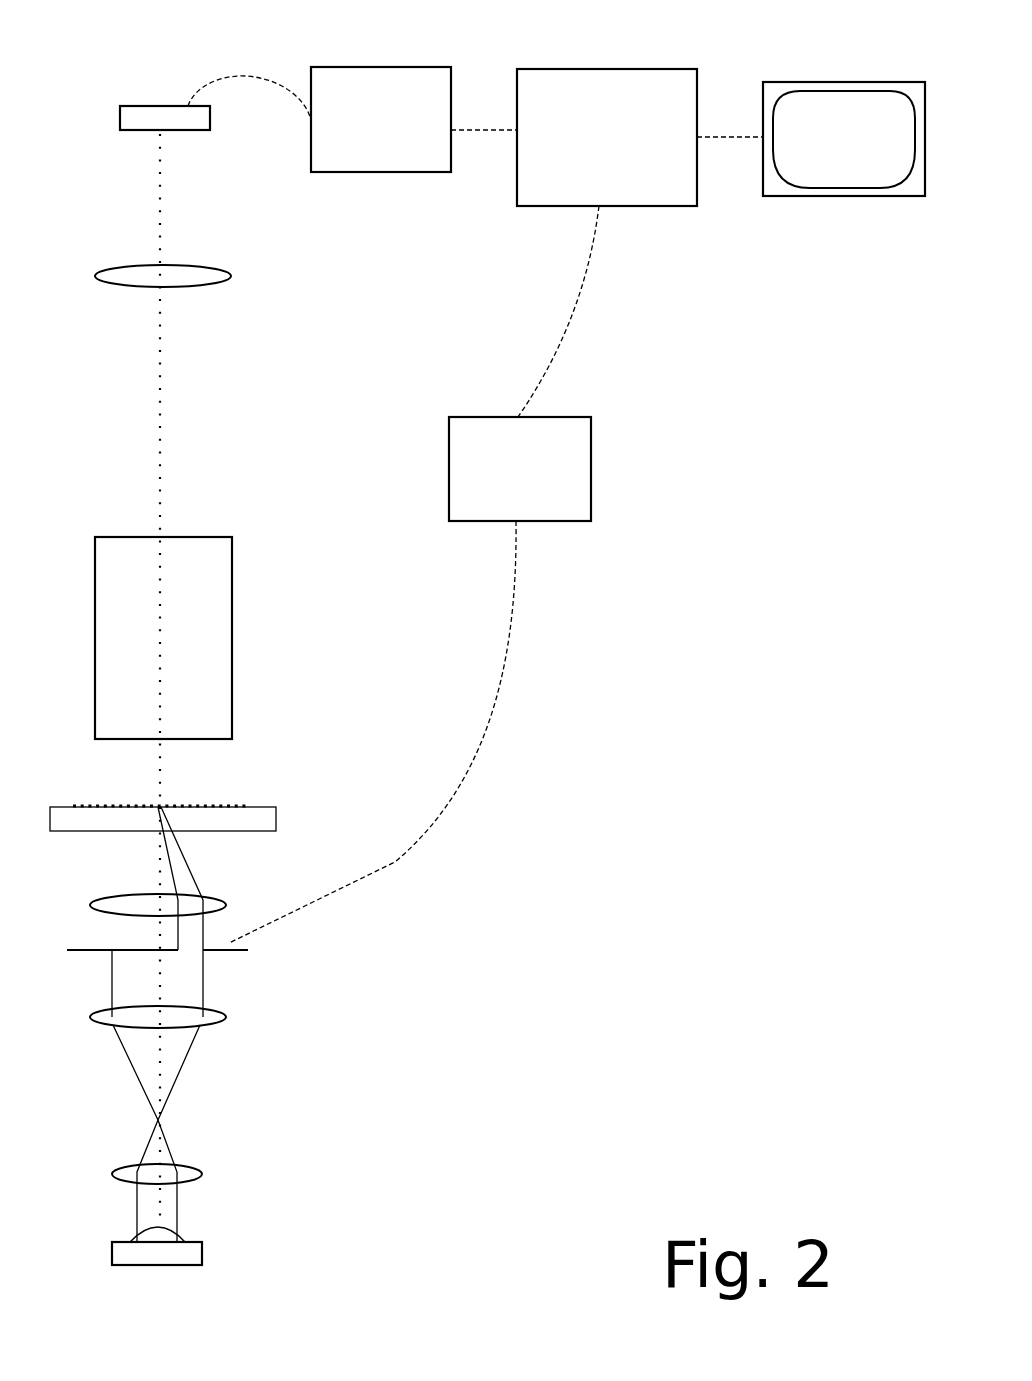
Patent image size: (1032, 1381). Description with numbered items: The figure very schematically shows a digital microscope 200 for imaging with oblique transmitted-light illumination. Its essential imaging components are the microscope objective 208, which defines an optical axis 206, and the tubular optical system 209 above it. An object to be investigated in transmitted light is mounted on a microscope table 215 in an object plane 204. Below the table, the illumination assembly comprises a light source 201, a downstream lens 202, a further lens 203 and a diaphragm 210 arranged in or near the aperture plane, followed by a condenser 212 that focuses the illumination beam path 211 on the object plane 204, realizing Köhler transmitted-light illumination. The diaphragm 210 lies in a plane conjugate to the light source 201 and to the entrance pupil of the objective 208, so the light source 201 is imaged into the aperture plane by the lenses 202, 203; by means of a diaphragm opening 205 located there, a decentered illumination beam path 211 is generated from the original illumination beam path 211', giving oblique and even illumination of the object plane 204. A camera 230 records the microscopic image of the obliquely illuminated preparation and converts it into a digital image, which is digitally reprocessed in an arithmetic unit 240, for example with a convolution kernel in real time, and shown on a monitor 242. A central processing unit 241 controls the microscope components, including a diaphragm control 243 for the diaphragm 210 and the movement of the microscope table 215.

The microscope 200 is at (586, 638).
The light source 201 is at (210, 1251).
The lens 202 is at (208, 1175).
The further lens 203 is at (230, 1018).
The object plane 204 is at (250, 806).
The diaphragm opening 205 is at (192, 956).
The optical axis 206 is at (166, 237).
The microscope objective 208 is at (94, 616).
The tubular optical system 209 is at (118, 290).
The diaphragm 210 is at (257, 951).
The illumination beam path 211 is at (202, 878).
The original illumination beam path 211' is at (178, 1133).
The condenser 212 is at (230, 898).
The microscope table 215 is at (278, 822).
The camera 230 is at (127, 134).
The arithmetic unit 240 is at (391, 66).
The central processing unit 241 is at (603, 68).
The monitor 242 is at (850, 81).
The diaphragm control 243 is at (592, 476).